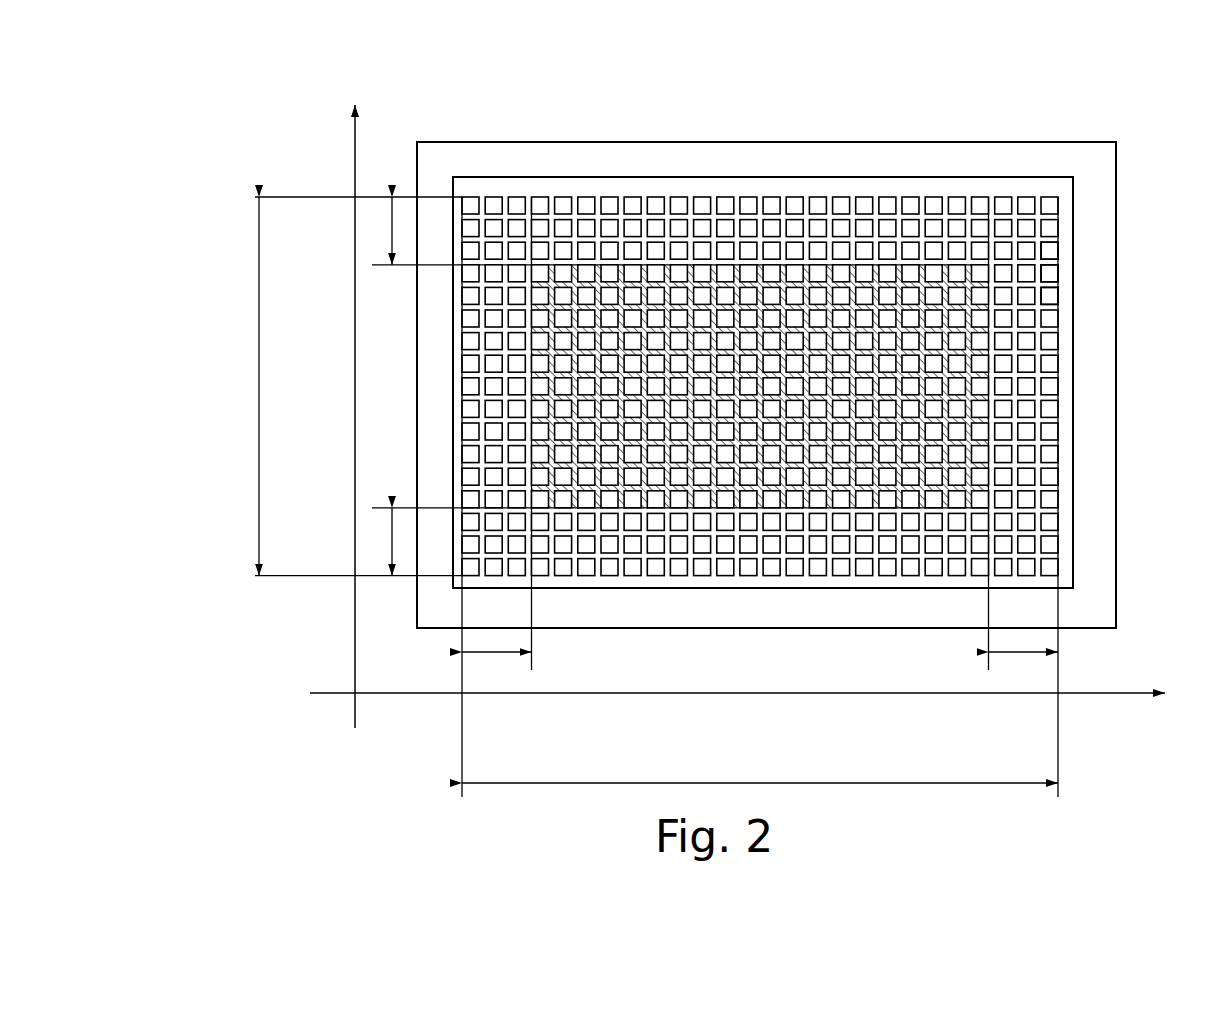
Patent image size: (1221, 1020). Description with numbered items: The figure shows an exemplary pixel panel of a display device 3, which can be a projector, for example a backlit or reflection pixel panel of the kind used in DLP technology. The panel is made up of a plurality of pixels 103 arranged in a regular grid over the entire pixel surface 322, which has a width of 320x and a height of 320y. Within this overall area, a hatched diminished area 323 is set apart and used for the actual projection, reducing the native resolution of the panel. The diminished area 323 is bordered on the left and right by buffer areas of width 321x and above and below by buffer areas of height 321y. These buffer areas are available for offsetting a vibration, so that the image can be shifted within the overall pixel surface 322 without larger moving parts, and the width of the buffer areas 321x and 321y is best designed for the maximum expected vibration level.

The display device 3 is at (1117, 112).
The pixels 103 is at (1050, 297).
The pixel surface 322 is at (1028, 502).
The diminished area 323 is at (930, 384).
The width of the overall area 320x is at (760, 766).
The height of the overall area 320y is at (327, 386).
The buffer area width 321x is at (502, 655).
The buffer area height 321y is at (392, 232).